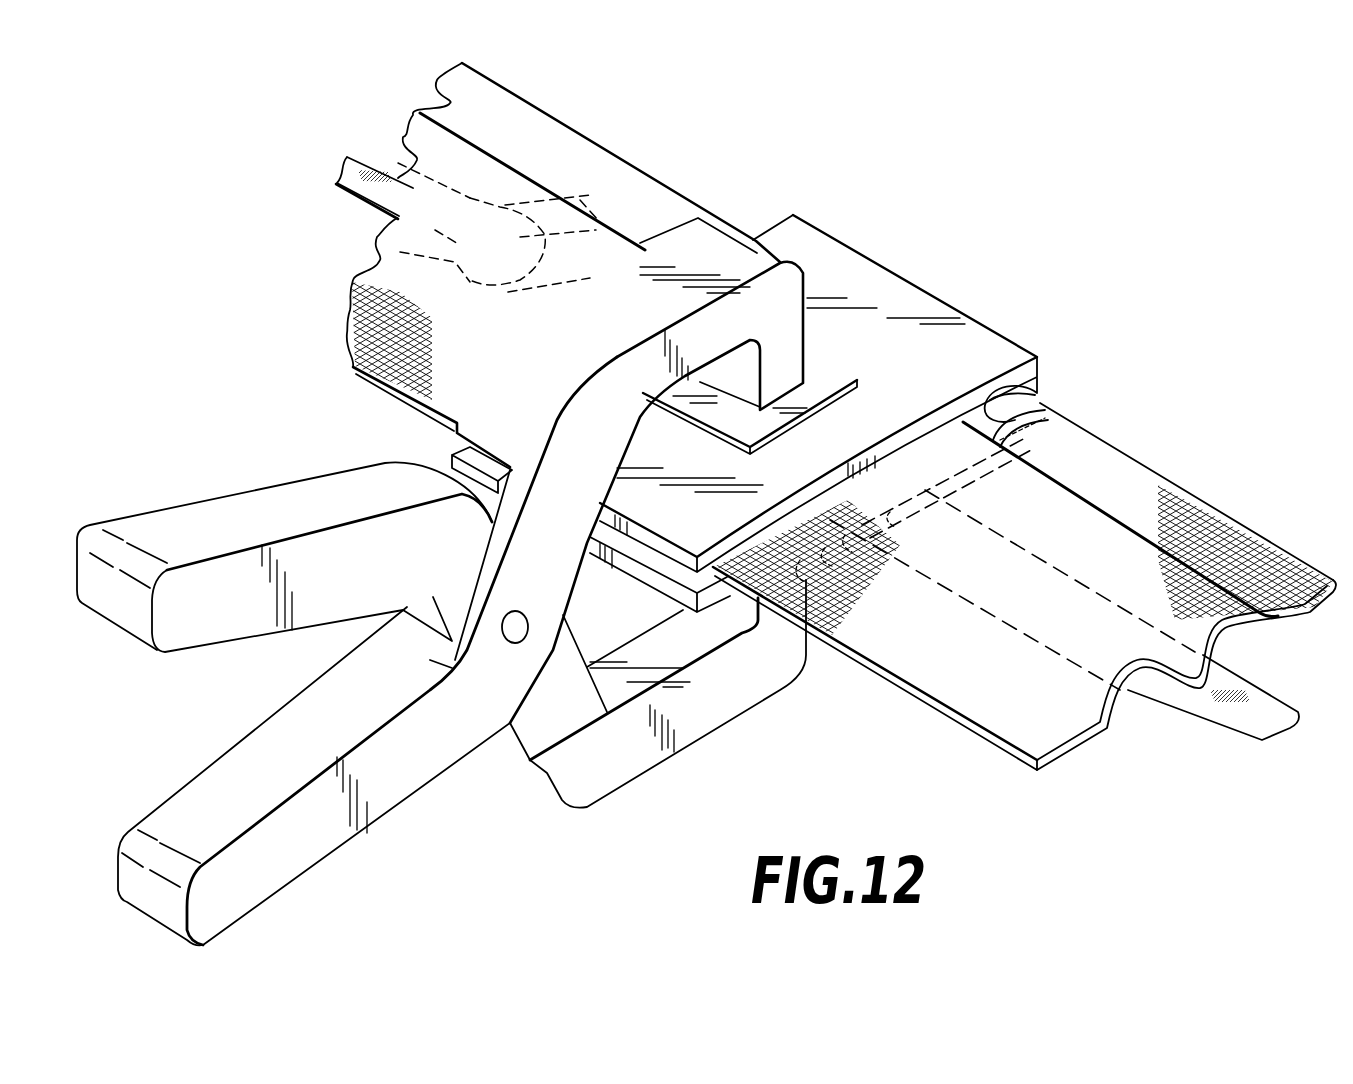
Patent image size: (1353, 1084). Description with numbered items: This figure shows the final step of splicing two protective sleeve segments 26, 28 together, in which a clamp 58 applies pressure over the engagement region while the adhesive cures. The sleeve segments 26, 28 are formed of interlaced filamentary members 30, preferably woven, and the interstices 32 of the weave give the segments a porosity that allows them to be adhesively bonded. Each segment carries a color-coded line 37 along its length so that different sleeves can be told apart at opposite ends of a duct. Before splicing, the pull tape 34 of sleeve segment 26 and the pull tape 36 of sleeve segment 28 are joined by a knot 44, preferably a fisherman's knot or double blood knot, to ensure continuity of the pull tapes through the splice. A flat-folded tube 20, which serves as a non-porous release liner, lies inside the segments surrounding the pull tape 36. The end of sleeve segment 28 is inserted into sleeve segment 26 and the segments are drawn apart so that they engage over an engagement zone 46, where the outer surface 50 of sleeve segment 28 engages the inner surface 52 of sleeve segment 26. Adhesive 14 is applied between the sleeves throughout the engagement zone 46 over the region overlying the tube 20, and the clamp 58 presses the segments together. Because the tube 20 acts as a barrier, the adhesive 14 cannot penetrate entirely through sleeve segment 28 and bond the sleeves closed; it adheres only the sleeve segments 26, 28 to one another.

The adhesive 14 is at (1000, 420).
The tube 20 is at (924, 488).
The sleeve segment 26 is at (642, 193).
The sleeve segment 28 is at (943, 662).
The filamentary members 30 is at (843, 603).
The interstices 32 is at (838, 552).
The pull tape 34 is at (347, 158).
The pull tape 36 is at (1237, 707).
The color-coded lines 37 is at (512, 160).
The knot 44 is at (400, 150).
The engagement zone 46 is at (985, 412).
The outer surface 50 is at (1140, 487).
The inner surface 52 is at (1000, 443).
The clamp 58 is at (953, 340).